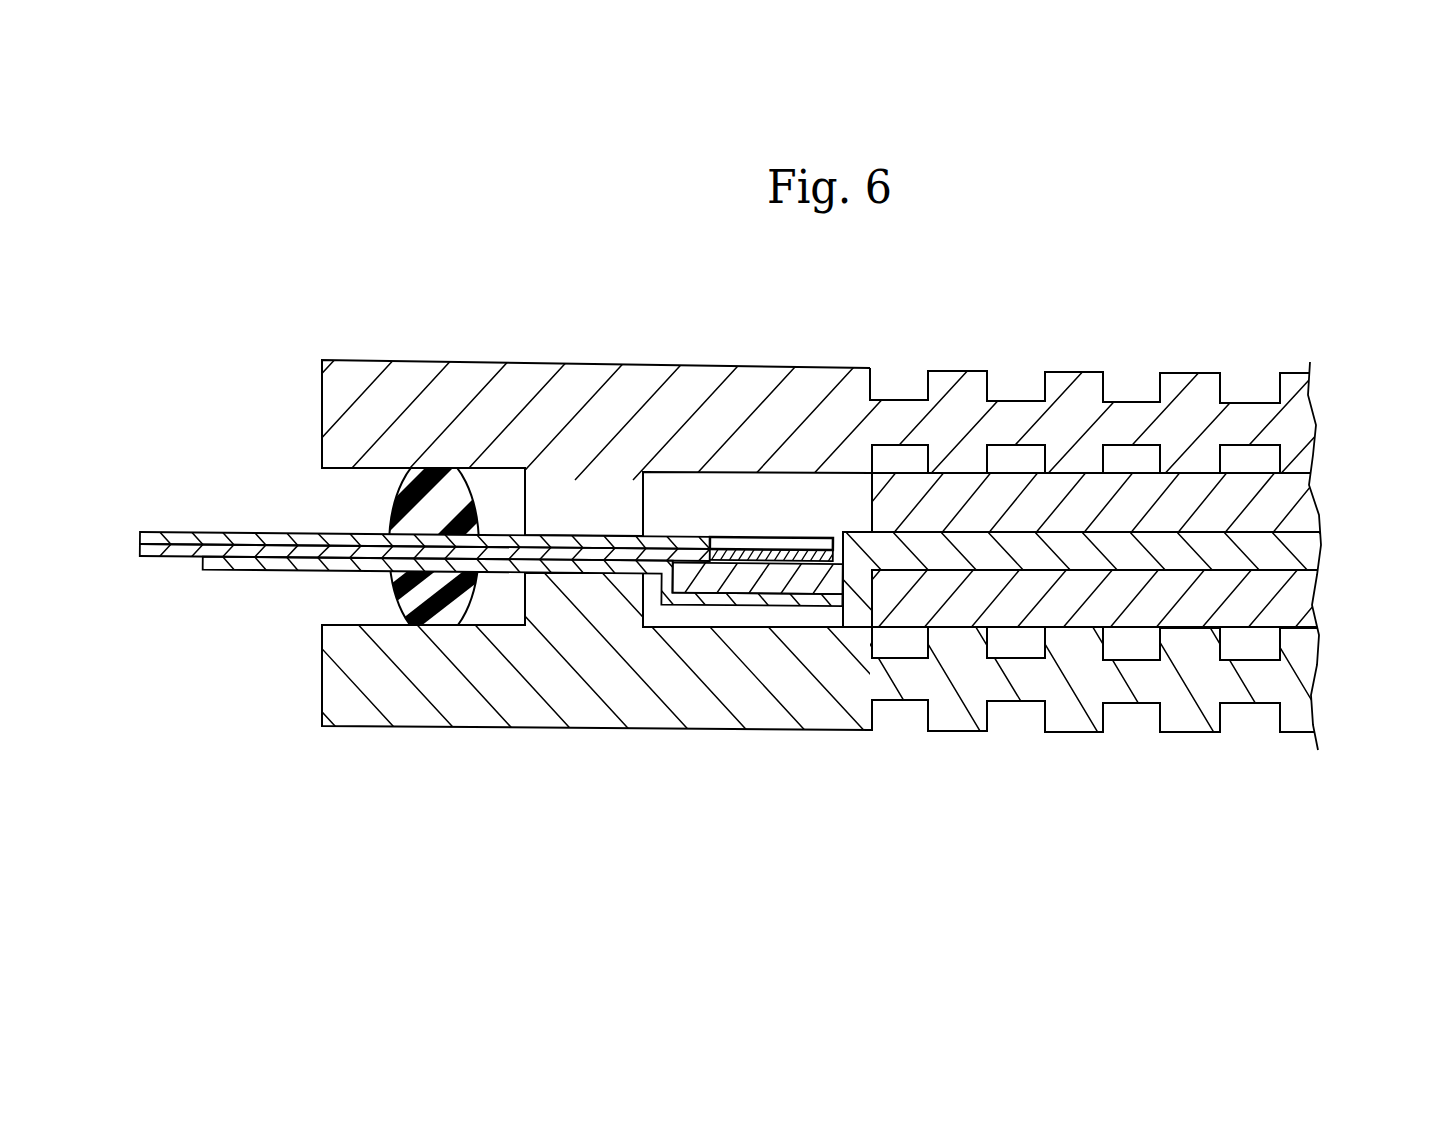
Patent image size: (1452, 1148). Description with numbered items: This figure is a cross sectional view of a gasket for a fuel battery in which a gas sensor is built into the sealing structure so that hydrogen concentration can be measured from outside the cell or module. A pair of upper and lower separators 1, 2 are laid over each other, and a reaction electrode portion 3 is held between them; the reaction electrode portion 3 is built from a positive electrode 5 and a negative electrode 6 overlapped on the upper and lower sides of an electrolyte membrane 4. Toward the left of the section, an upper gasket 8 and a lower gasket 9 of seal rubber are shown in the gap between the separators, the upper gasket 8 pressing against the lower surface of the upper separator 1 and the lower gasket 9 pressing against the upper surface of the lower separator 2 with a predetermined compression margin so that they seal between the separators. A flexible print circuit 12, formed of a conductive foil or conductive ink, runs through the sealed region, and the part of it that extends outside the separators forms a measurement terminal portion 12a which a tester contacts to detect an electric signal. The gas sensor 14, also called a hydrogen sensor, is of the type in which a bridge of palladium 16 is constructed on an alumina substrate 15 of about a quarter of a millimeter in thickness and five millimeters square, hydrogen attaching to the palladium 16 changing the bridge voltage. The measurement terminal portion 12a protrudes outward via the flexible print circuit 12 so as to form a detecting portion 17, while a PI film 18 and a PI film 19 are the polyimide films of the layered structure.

The upper separator 1 is at (1172, 388).
The lower separator 2 is at (1177, 718).
The reaction electrode portion 3 is at (1248, 474).
The electrolyte membrane 4 is at (1305, 555).
The positive electrode 5 is at (1305, 517).
The negative electrode 6 is at (1305, 592).
The upper gasket 8 is at (435, 507).
The lower gasket 9 is at (432, 593).
The flexible print circuit 12 is at (287, 550).
The measurement terminal portion 12a is at (176, 556).
The gas sensor 14 is at (722, 522).
The alumina substrate 15 is at (774, 575).
The palladium 16 is at (774, 553).
The detecting portion 17 is at (510, 547).
The PI film 18 is at (587, 522).
The PI film 19 is at (587, 577).